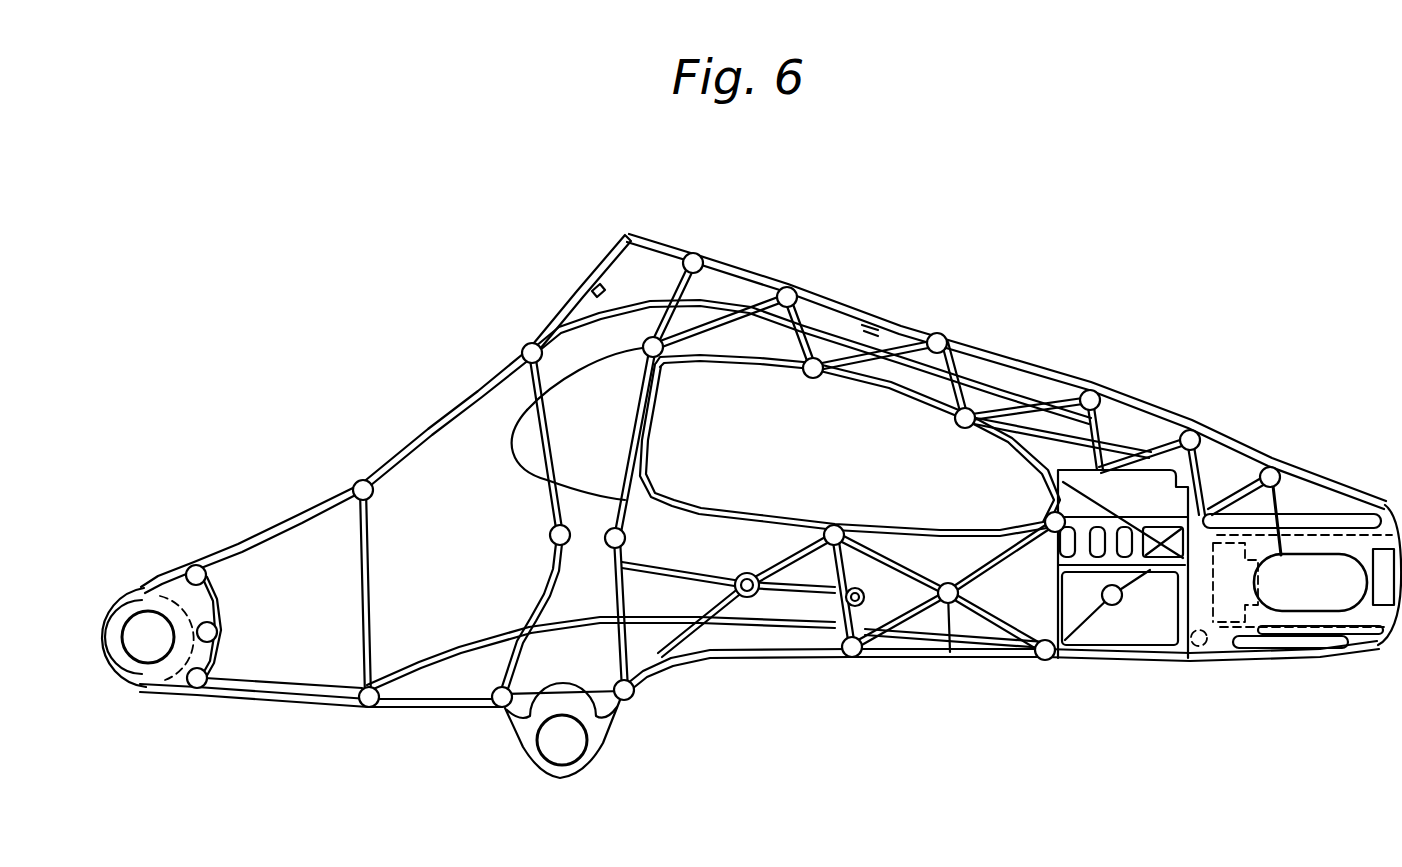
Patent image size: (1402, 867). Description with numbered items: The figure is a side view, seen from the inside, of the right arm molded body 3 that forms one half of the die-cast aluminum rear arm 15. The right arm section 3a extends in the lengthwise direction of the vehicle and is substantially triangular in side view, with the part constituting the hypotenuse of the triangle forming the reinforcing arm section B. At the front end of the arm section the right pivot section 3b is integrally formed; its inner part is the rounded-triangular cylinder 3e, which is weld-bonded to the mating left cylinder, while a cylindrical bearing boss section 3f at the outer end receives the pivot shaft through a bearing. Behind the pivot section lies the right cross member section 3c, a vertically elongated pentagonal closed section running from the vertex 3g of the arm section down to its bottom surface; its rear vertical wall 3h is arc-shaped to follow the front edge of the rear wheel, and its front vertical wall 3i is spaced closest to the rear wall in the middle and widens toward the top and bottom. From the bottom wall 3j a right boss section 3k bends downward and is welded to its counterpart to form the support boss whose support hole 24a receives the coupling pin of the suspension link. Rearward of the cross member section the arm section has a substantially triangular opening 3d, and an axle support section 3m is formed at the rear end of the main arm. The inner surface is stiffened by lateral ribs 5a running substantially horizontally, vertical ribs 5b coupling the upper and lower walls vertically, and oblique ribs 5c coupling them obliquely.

The right arm molded body 3 is at (786, 284).
The right arm section 3a is at (720, 660).
The right pivot section 3b is at (115, 590).
The right cross member section 3c is at (650, 401).
The opening 3d is at (860, 393).
The right cylinder 3e is at (213, 590).
The right bearing boss section 3f is at (101, 637).
The vertex 3g is at (628, 236).
The rear vertical wall 3h is at (648, 446).
The front vertical wall 3i is at (540, 456).
The bottom wall 3j is at (557, 689).
The right boss section 3k is at (517, 744).
The right axle support section 3m is at (1326, 652).
The lateral ribs 5a is at (683, 577).
The vertical ribs 5b is at (815, 330).
The oblique ribs 5c is at (757, 300).
The rear arm 15 is at (498, 297).
The support hole 24a is at (578, 738).
The reinforcing arm sections B is at (475, 378).